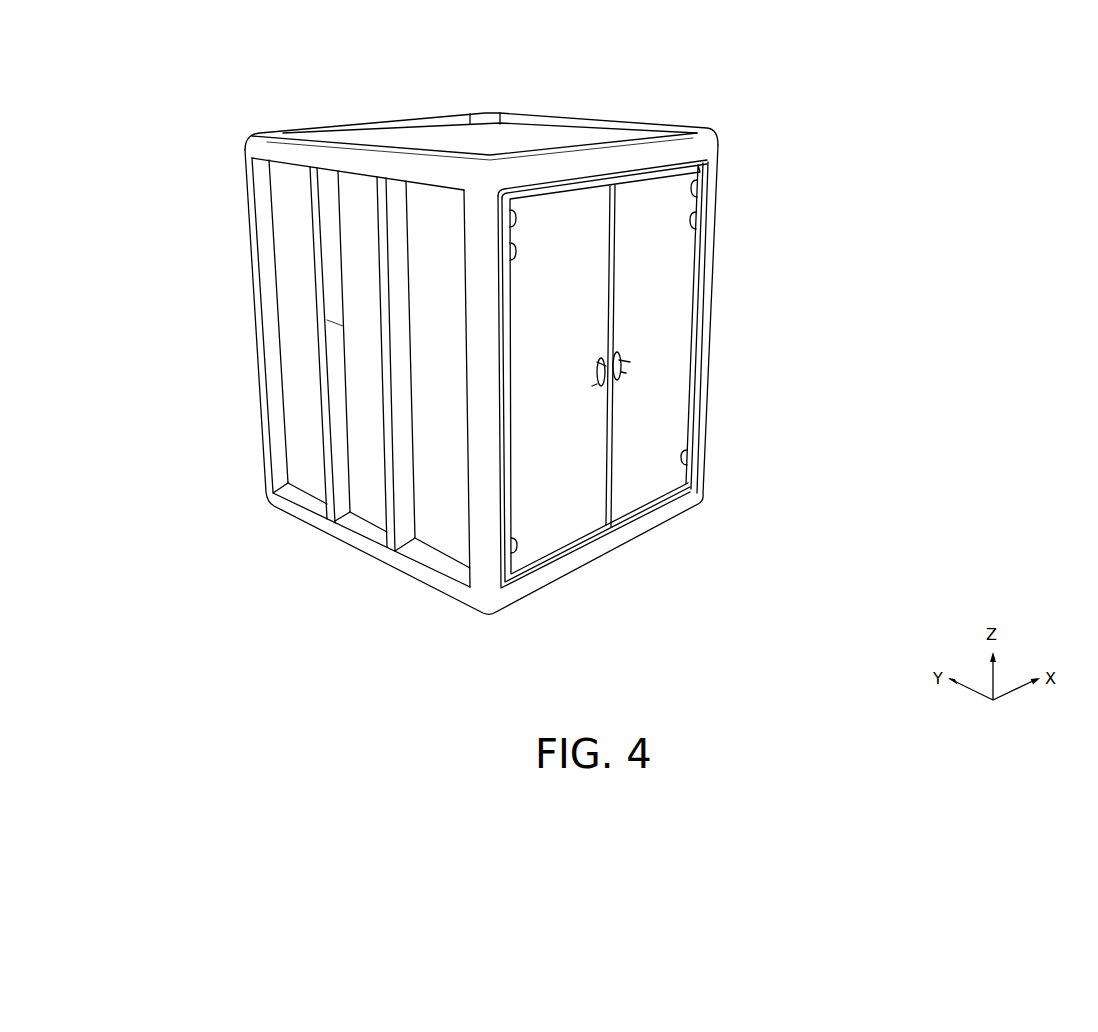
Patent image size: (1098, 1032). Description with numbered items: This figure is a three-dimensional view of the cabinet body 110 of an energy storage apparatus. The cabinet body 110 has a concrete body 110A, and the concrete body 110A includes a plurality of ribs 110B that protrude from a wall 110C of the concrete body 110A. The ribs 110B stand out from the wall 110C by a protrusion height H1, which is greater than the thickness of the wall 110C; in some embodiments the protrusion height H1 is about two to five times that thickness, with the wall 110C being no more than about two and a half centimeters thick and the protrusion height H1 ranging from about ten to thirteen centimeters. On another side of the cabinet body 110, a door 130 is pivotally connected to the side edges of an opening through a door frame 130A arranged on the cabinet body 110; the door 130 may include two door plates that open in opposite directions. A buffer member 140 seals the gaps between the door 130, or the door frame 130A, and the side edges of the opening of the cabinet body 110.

The cabinet body 110 is at (466, 347).
The concrete body 110A is at (257, 141).
The ribs 110B is at (263, 257).
The wall 110C is at (283, 210).
The protrusion height H1 is at (340, 323).
The door 130 is at (697, 243).
The door frame 130A is at (713, 270).
The buffer member 140 is at (712, 214).